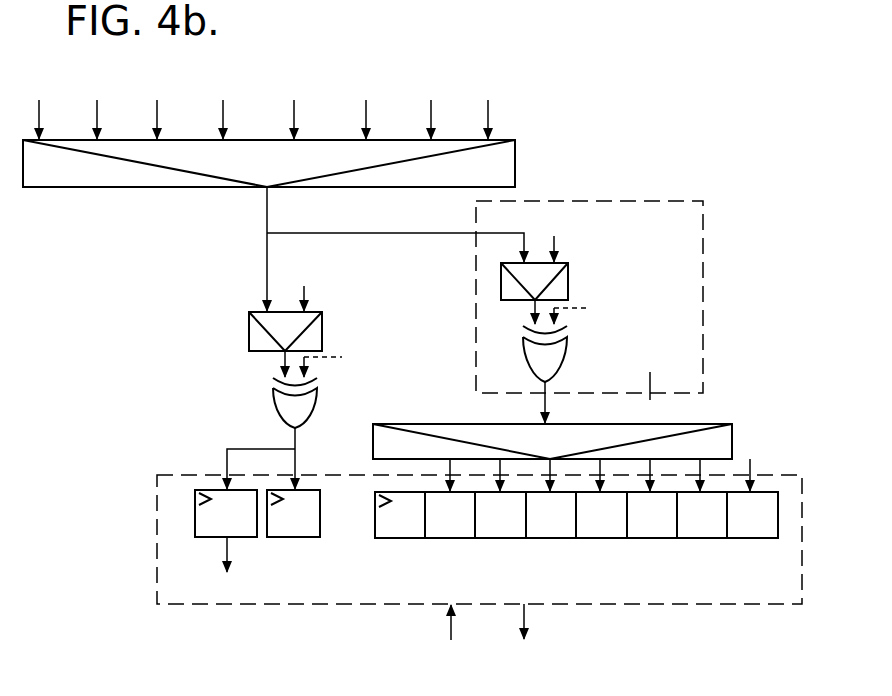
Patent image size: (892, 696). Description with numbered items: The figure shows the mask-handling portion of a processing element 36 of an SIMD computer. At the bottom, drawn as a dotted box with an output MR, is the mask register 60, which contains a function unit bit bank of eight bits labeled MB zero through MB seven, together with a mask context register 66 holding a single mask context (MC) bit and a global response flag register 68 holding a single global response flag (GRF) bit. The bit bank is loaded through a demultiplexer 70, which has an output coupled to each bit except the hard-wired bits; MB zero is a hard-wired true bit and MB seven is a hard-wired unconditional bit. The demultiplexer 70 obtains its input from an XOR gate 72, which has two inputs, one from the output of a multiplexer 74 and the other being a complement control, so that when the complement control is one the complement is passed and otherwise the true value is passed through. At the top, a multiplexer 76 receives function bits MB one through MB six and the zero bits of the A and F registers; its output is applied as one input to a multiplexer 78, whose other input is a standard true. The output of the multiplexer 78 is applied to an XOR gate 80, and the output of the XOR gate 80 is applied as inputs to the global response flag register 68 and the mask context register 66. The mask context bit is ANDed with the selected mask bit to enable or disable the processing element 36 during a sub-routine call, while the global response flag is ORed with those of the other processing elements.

The processing element 36 is at (741, 133).
The mask register 60 is at (752, 477).
The mask context register 66 is at (320, 525).
The global response flag register 68 is at (237, 537).
The demultiplexer 70 is at (692, 424).
The XOR gate 72 is at (560, 366).
The multiplexer 74 is at (568, 275).
The multiplexer 76 is at (515, 142).
The multiplexer 78 is at (322, 323).
The XOR gate 80 is at (312, 405).